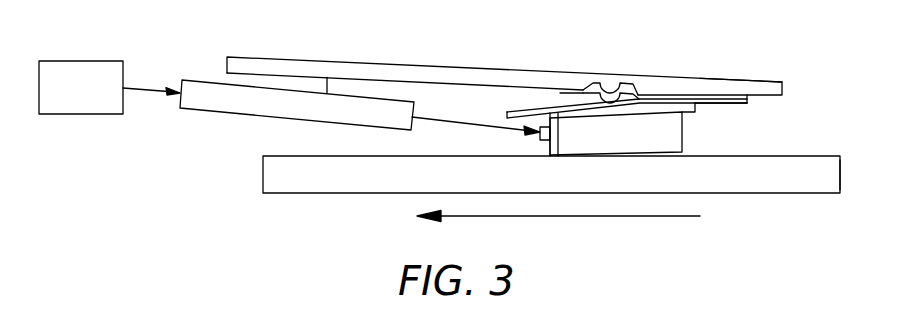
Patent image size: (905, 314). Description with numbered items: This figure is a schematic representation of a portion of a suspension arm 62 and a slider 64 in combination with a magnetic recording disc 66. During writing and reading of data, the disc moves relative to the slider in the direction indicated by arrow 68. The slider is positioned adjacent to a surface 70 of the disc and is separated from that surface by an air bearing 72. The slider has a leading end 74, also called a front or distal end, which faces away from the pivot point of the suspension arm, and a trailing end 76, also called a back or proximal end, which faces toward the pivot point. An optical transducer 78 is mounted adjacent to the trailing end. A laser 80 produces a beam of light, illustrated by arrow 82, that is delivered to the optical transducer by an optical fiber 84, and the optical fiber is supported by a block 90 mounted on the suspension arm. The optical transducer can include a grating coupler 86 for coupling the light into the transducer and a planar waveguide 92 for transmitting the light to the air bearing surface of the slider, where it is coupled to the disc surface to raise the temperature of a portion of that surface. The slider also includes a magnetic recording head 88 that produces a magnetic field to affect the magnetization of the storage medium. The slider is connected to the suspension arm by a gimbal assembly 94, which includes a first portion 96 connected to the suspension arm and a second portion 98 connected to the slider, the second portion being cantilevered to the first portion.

The suspension arm 62 is at (432, 66).
The slider 64 is at (684, 122).
The magnetic recording disc 66 is at (841, 181).
The arrow 68 is at (604, 217).
The surface 70 is at (806, 155).
The air bearing 72 is at (684, 153).
The leading end 74 is at (683, 137).
The trailing end 76 is at (541, 138).
The optical transducer 78 is at (520, 135).
The laser 80 is at (75, 115).
The arrow 82 is at (146, 94).
The optical fiber 84 is at (236, 107).
The grating coupler 86 is at (548, 120).
The magnetic recording head 88 is at (567, 92).
The block 90 is at (364, 90).
The planar waveguide 92 is at (558, 120).
The gimbal assembly 94 is at (661, 96).
The first portion 96 is at (725, 81).
The second portion 98 is at (686, 108).